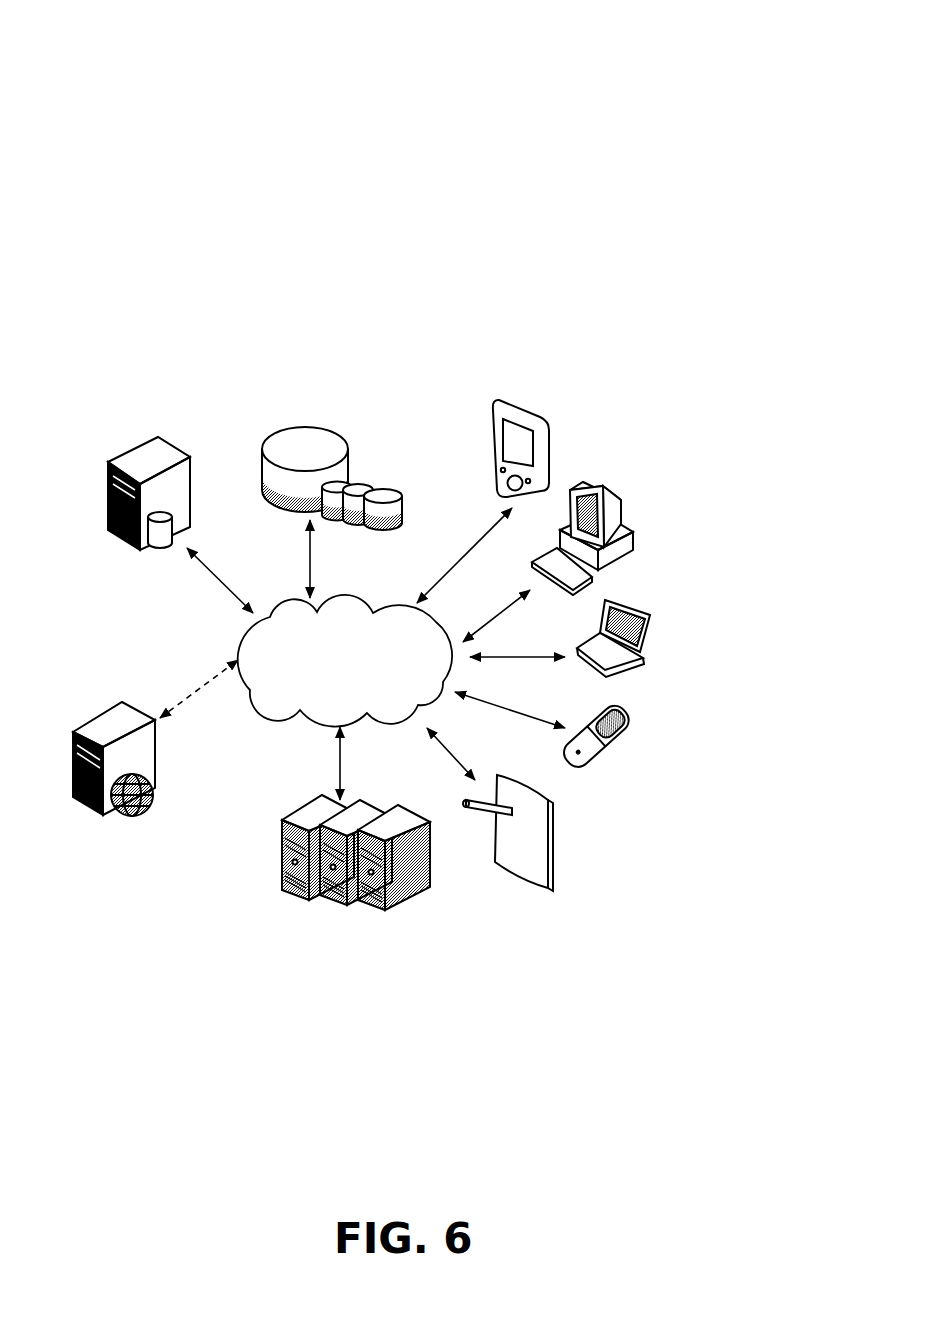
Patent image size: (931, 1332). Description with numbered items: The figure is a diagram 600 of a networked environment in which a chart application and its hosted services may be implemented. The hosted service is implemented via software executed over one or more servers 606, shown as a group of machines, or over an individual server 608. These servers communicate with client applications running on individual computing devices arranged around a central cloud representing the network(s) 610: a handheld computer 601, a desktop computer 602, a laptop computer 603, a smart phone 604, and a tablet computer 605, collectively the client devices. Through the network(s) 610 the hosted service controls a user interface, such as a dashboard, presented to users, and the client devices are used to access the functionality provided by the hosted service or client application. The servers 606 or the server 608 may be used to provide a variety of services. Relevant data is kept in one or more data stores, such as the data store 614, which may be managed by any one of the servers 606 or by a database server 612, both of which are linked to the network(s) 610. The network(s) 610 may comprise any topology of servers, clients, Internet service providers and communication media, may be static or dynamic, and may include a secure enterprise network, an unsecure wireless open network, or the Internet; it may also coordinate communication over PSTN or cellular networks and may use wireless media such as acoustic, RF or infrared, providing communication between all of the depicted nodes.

The diagram 600 is at (682, 22).
The handheld computer 601 is at (554, 405).
The desktop computer 602 is at (638, 495).
The laptop computer 603 is at (654, 600).
The smart phone 604 is at (627, 714).
The tablet computer 605 is at (567, 812).
The servers 606 is at (308, 802).
The server 608 is at (96, 710).
The network(s) 610 is at (348, 589).
The database server 612 is at (161, 562).
The data store 614 is at (321, 404).